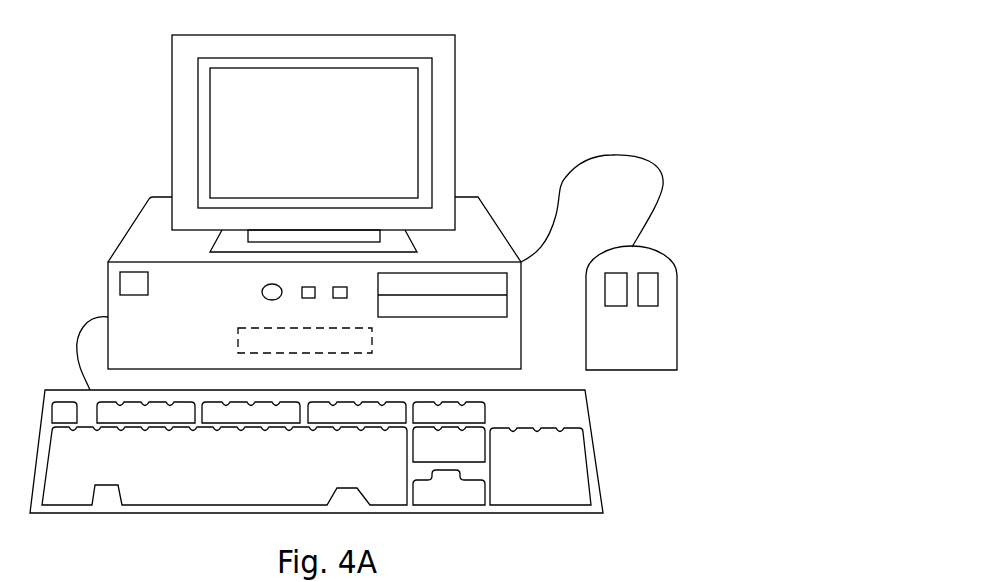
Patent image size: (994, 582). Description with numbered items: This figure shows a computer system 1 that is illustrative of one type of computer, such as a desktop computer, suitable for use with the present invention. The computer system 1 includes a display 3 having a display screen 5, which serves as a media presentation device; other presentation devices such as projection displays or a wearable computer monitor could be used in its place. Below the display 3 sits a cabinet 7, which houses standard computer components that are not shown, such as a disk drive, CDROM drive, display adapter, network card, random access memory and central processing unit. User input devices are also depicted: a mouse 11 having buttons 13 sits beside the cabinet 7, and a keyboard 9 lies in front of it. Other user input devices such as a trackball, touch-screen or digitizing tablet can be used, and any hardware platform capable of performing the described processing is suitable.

The computer system 1 is at (618, 79).
The display 3 is at (455, 130).
The display screen 5 is at (393, 123).
The cabinet 7 is at (473, 235).
The keyboard 9 is at (175, 514).
The mouse 11 is at (658, 337).
The buttons 13 is at (615, 273).